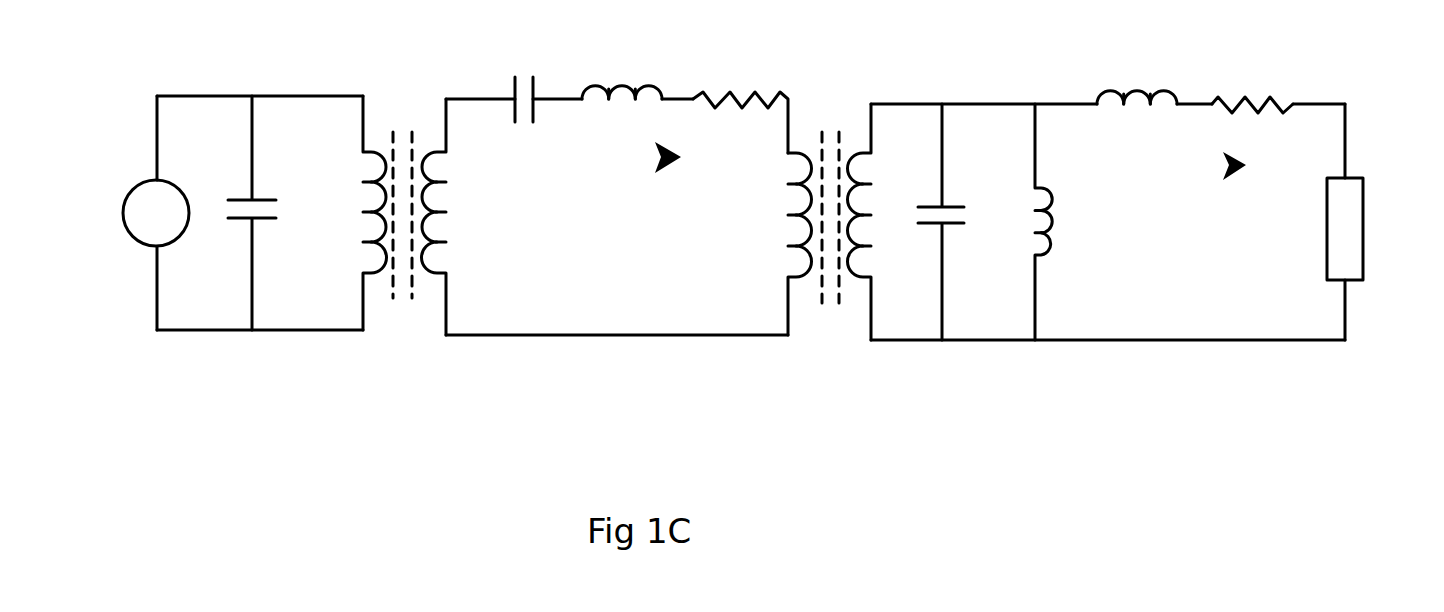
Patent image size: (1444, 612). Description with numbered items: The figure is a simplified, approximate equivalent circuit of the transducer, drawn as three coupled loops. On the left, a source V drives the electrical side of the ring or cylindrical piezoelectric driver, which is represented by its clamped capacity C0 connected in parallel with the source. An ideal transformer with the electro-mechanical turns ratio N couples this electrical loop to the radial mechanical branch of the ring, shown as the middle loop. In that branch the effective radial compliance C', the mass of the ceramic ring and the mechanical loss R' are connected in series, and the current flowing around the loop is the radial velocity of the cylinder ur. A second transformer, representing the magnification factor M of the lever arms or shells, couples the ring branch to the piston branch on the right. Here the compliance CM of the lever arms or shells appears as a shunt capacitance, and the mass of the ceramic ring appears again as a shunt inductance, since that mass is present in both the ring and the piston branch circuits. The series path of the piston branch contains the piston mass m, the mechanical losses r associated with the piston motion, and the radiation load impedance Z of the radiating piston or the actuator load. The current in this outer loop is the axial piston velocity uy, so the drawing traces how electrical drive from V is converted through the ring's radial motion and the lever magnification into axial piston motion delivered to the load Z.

The voltage source V is at (156, 213).
The clamped capacity C0 is at (277, 213).
The effective radial compliance C' is at (526, 72).
The mechanical loss R' is at (740, 88).
The radial velocity of the cylinder ur is at (633, 172).
The compliance CM is at (971, 222).
The piston mass m is at (1137, 62).
The mechanical losses r is at (1252, 67).
The axial piston velocity uy is at (1199, 182).
The radiation load impedance Z is at (1374, 222).